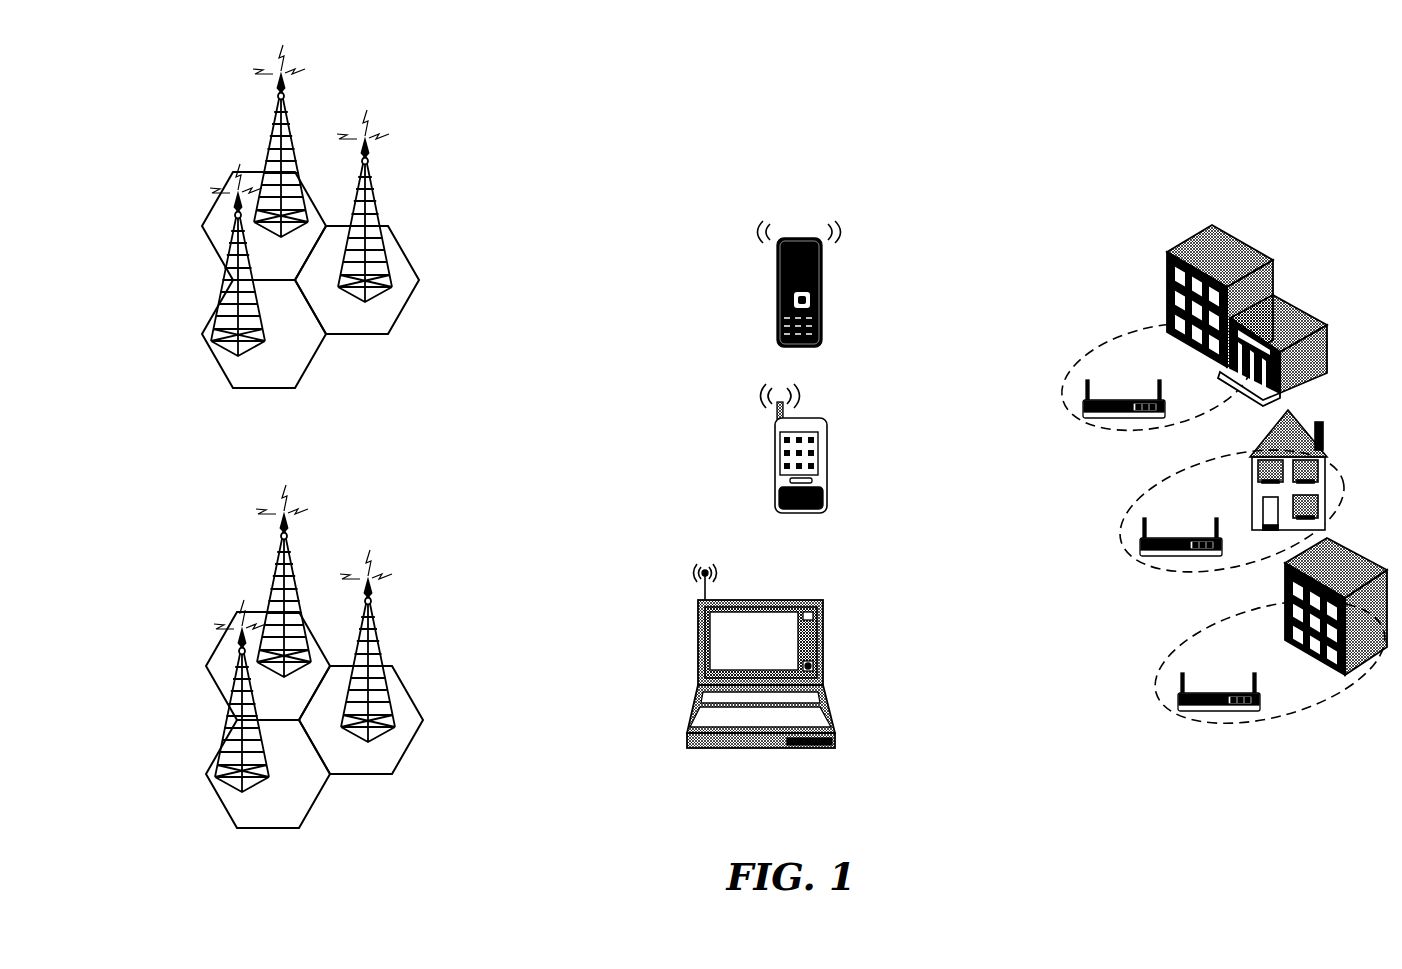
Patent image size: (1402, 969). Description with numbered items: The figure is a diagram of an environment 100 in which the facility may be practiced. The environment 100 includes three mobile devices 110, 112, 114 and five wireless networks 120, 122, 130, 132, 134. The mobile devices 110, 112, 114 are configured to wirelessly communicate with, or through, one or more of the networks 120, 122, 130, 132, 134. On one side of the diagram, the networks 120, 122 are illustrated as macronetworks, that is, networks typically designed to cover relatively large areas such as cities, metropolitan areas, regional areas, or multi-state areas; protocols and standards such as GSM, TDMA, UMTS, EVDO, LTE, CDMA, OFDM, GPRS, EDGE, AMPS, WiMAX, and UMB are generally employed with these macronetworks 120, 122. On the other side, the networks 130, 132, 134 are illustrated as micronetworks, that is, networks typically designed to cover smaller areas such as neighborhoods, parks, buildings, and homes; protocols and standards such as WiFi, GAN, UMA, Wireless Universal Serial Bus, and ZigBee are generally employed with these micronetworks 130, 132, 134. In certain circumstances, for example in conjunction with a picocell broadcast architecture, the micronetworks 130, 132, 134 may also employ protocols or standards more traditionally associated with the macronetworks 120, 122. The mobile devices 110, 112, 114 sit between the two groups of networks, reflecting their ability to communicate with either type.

The environment 100 is at (1083, 150).
The mobile device 110 is at (825, 290).
The mobile device 112 is at (826, 412).
The mobile device 114 is at (816, 600).
The macronetwork 120 is at (380, 178).
The macronetwork 122 is at (384, 620).
The micronetwork 130 is at (1205, 321).
The micronetwork 132 is at (1233, 483).
The micronetwork 134 is at (1282, 624).